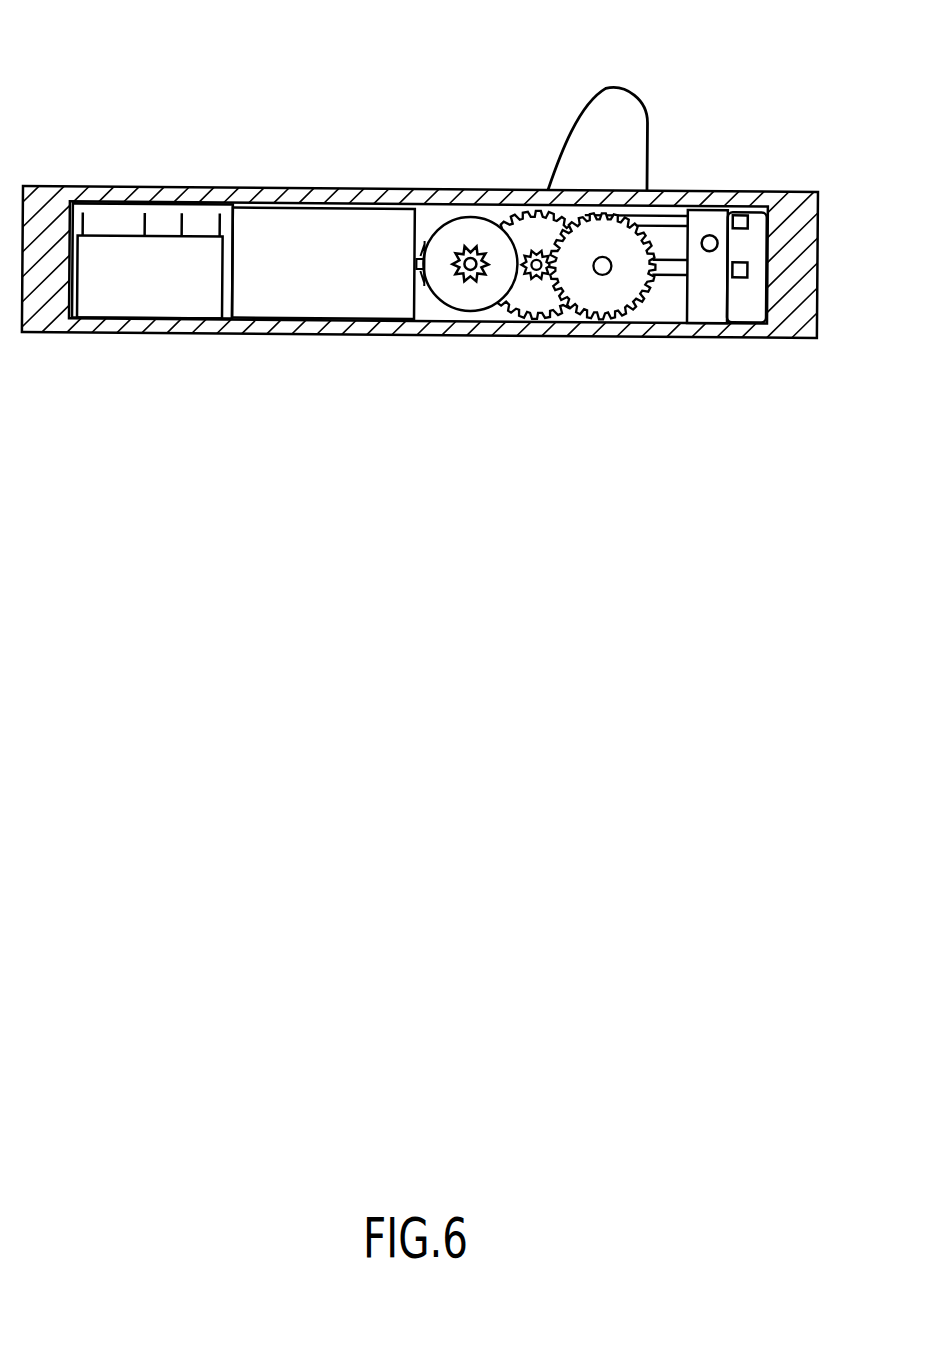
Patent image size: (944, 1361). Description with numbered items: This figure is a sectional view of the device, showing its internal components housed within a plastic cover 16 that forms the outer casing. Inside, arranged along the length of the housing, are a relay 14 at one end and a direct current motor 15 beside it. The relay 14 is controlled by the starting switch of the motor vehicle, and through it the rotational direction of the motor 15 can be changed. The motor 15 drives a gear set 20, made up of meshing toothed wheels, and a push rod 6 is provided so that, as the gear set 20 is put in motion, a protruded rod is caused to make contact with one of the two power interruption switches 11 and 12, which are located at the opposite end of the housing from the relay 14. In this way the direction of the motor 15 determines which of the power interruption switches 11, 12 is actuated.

The push rod 6 is at (617, 105).
The power interruption switch 11 is at (677, 190).
The power interruption switch 12 is at (665, 278).
The relay 14 is at (162, 295).
The direct current motor 15 is at (327, 290).
The plastic cover 16 is at (55, 198).
The gear set 20 is at (533, 300).